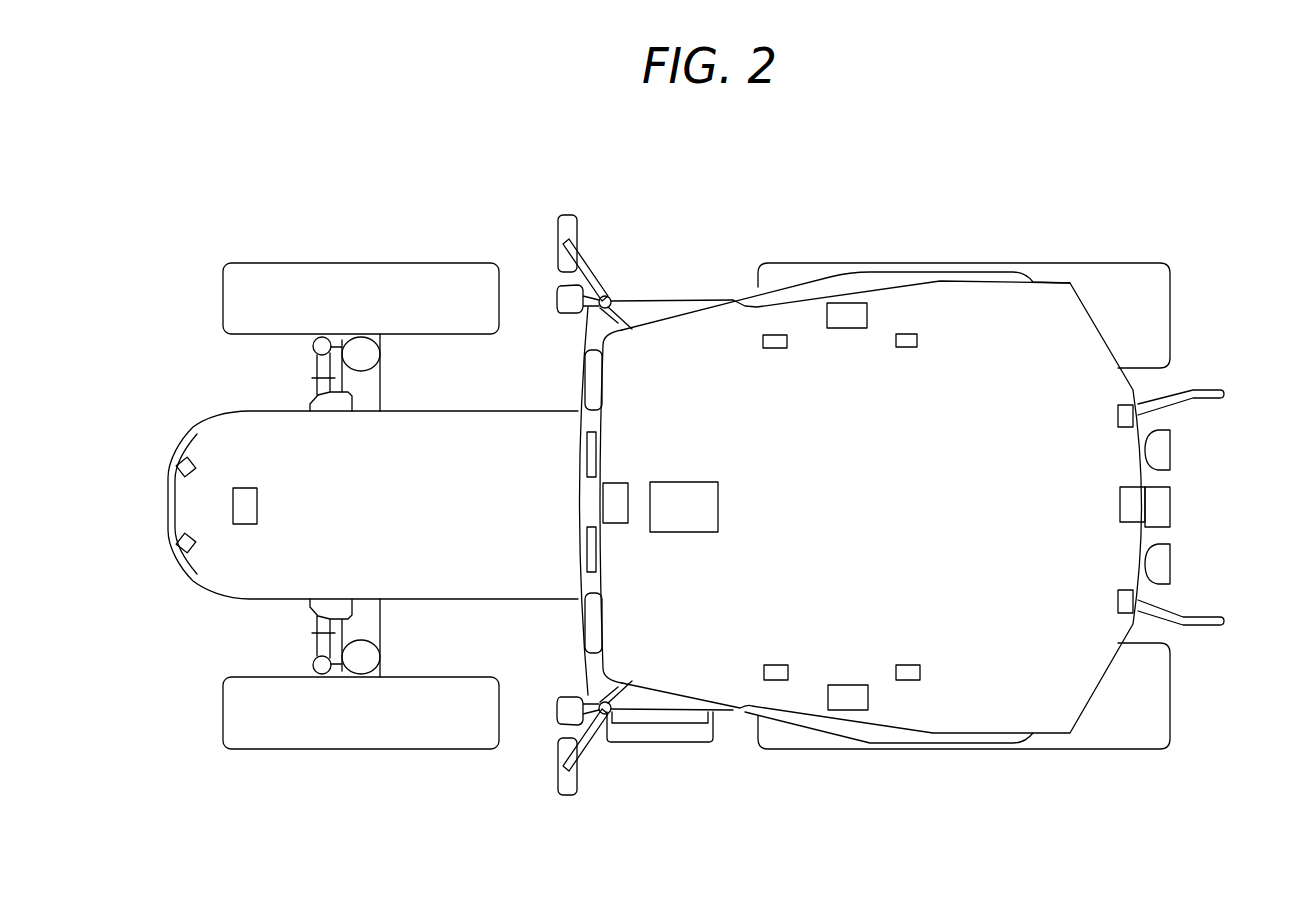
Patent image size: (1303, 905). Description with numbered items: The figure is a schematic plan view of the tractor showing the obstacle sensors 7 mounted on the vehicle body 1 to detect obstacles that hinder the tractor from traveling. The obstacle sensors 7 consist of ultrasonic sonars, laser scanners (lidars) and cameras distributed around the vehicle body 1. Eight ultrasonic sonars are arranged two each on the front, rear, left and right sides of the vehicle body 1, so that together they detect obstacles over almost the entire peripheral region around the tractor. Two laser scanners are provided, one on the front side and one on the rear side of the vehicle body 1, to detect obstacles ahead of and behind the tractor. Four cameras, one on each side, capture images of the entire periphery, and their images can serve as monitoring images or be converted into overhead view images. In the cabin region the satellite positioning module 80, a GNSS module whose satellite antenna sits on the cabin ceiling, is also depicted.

The vehicle body 1 is at (939, 212).
The obstacle sensors 7 is at (897, 726).
The satellite positioning module 80 is at (727, 473).